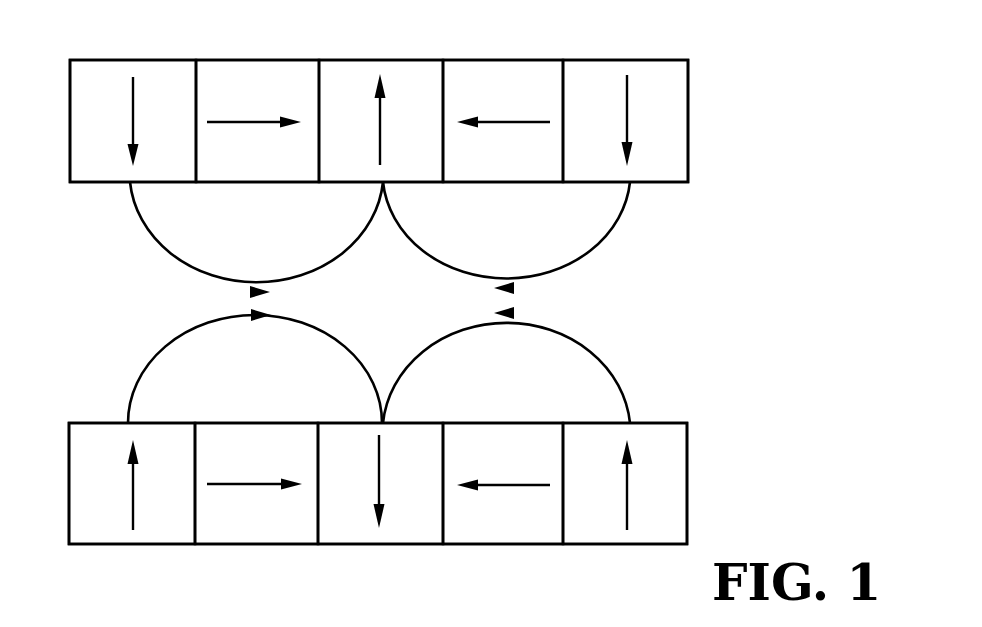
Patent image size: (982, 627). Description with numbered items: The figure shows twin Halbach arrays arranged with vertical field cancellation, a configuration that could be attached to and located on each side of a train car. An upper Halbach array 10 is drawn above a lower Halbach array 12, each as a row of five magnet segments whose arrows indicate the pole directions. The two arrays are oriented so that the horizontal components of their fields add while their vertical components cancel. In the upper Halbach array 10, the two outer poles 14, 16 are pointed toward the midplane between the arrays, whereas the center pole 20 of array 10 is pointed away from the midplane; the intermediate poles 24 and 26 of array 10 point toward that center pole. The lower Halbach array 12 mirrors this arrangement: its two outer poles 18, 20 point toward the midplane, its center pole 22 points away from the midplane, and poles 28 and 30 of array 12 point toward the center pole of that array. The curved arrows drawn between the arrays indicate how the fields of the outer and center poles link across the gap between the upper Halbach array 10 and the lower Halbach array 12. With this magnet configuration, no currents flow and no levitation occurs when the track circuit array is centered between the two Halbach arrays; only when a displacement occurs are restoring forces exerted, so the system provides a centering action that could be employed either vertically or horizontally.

The upper Halbach array 10 is at (718, 114).
The lower Halbach array 12 is at (718, 481).
The outer pole 14 is at (610, 58).
The outer pole 16 is at (152, 58).
The outer pole 18 is at (630, 546).
The outer pole / center pole 20 is at (378, 58).
The center pole 22 is at (392, 546).
The pole 24 is at (262, 58).
The pole 26 is at (496, 58).
The pole 28 is at (270, 546).
The pole 30 is at (527, 546).